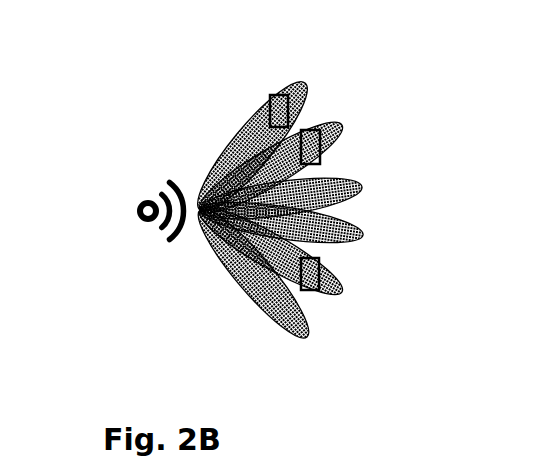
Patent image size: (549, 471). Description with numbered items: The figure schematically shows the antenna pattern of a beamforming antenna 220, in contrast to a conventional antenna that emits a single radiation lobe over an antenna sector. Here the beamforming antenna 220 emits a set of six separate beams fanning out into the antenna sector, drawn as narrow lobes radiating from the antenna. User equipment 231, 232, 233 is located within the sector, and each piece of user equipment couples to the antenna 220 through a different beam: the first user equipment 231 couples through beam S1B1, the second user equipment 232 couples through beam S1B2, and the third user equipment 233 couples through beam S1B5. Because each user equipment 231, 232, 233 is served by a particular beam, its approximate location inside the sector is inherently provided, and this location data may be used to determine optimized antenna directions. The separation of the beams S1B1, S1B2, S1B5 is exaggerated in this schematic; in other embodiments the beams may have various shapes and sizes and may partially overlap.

The beamforming antenna 220 is at (144, 162).
The user equipment 231 is at (272, 100).
The user equipment 232 is at (320, 155).
The user equipment 233 is at (319, 265).
The beam S1B1 is at (303, 81).
The beam S1B2 is at (340, 123).
The beam S1B5 is at (340, 292).